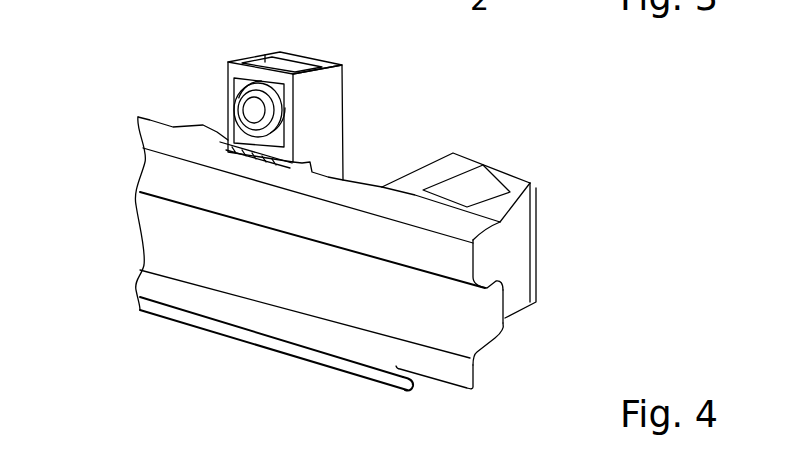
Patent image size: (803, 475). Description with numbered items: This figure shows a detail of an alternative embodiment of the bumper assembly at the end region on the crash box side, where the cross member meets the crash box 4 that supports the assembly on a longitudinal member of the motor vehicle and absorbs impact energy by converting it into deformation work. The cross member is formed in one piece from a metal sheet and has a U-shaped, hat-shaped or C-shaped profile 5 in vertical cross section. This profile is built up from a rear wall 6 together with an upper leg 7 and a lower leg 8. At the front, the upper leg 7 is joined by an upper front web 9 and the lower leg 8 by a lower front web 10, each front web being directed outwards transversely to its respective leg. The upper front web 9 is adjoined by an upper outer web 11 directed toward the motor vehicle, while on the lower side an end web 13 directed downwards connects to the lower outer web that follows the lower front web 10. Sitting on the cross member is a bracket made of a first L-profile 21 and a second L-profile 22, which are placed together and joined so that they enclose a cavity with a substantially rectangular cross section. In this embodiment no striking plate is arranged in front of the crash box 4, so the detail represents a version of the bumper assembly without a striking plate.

The crash box 4 is at (493, 187).
The profile 5 is at (135, 283).
The rear wall 6 is at (493, 307).
The upper leg 7 is at (488, 278).
The lower leg 8 is at (485, 347).
The upper front web 9 is at (150, 178).
The lower front web 10 is at (441, 380).
The upper outer web 11 is at (175, 140).
The end web 13 is at (367, 383).
The first L-profile 21 is at (320, 126).
The second L-profile 22 is at (316, 62).